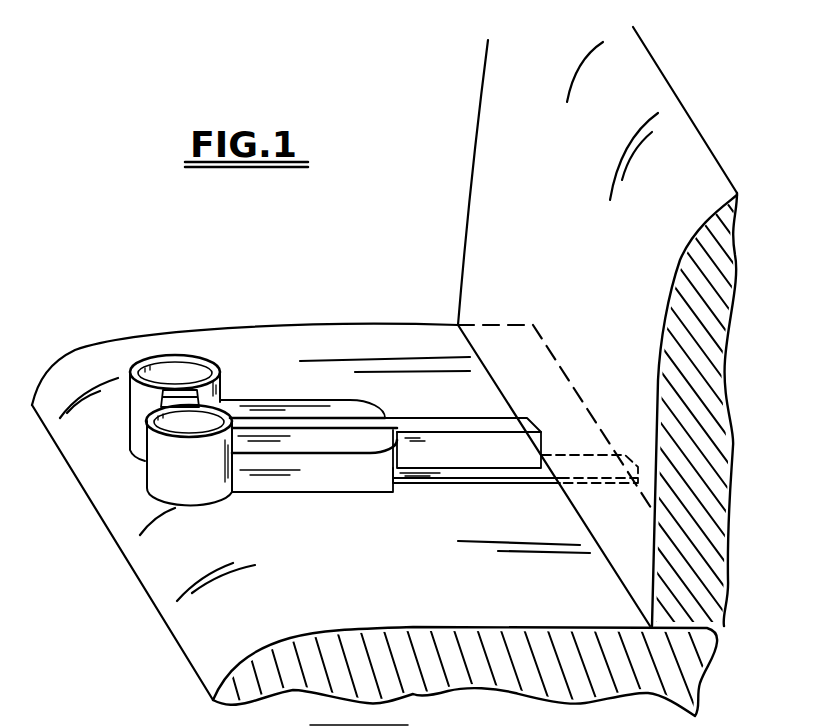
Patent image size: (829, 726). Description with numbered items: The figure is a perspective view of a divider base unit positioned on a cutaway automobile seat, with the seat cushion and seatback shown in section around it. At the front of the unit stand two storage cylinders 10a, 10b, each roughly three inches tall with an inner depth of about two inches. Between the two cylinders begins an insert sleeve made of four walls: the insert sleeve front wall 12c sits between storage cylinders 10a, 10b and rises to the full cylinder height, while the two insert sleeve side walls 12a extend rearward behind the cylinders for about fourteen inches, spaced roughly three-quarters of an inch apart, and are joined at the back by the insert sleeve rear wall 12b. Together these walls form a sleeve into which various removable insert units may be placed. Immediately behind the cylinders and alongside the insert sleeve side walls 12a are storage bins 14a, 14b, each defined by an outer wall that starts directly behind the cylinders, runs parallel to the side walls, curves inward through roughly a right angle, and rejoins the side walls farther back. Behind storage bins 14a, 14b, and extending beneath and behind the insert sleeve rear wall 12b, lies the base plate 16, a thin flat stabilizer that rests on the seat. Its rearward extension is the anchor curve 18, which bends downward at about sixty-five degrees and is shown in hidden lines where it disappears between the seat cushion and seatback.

The storage cylinder 10a is at (138, 437).
The storage cylinder 10b is at (193, 481).
The insert sleeve side walls 12a is at (487, 425).
The insert sleeve rear wall 12b is at (533, 430).
The insert sleeve front wall 12c is at (180, 388).
The storage bin 14a is at (347, 411).
The storage bin 14b is at (347, 475).
The base plate 16 is at (457, 475).
The anchor curve 18 is at (625, 470).